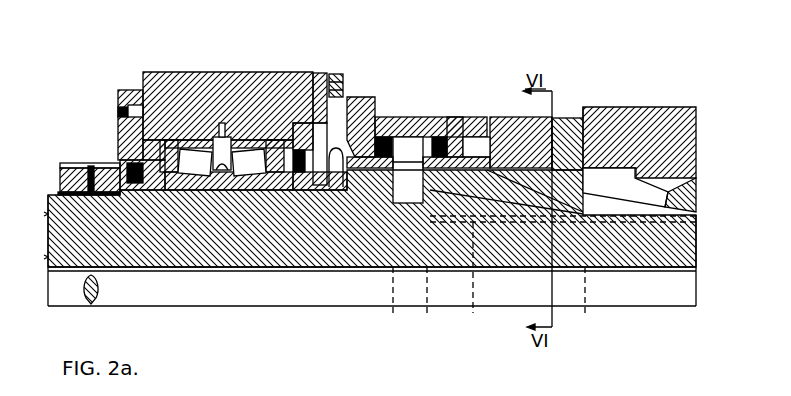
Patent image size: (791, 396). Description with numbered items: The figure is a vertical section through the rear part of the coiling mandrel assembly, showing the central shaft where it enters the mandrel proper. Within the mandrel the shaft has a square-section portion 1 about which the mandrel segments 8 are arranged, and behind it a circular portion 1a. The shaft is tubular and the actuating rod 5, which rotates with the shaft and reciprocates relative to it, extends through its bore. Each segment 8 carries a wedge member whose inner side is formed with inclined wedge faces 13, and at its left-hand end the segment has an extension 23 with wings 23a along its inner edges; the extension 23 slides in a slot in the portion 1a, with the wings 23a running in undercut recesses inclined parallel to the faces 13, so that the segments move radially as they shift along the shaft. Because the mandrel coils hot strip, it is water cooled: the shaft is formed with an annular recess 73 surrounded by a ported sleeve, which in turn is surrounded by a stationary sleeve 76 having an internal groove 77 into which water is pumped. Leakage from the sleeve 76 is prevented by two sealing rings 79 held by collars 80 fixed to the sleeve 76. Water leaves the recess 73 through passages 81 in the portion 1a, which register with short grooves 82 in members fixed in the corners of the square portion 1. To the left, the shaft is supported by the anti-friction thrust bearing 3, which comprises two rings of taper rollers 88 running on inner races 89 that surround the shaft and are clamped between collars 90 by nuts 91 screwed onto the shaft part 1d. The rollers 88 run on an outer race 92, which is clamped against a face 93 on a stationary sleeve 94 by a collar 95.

The shaft portion 1 is at (684, 248).
The shaft portion 1a is at (448, 252).
The shaft part 1d is at (60, 194).
The anti-friction thrust bearing 3 is at (112, 150).
The actuating rod 5 is at (104, 297).
The mandrel segment 8 is at (630, 113).
The wedge face 13 is at (639, 190).
The extension 23 is at (562, 118).
The wing 23a is at (584, 112).
The annular recess 73 is at (408, 170).
The stationary sleeve 76 is at (452, 118).
The internal groove 77 is at (409, 139).
The sealing ring 79 is at (392, 140).
The collar 80 is at (378, 118).
The passage 81 is at (474, 280).
The short groove 82 is at (632, 270).
The taper roller 88 is at (200, 176).
The inner race 89 is at (175, 185).
The collar 90 is at (138, 196).
The nut 91 is at (90, 164).
The outer race 92 is at (252, 118).
The face 93 is at (343, 86).
The stationary sleeve 94 is at (320, 115).
The collar 95 is at (132, 104).